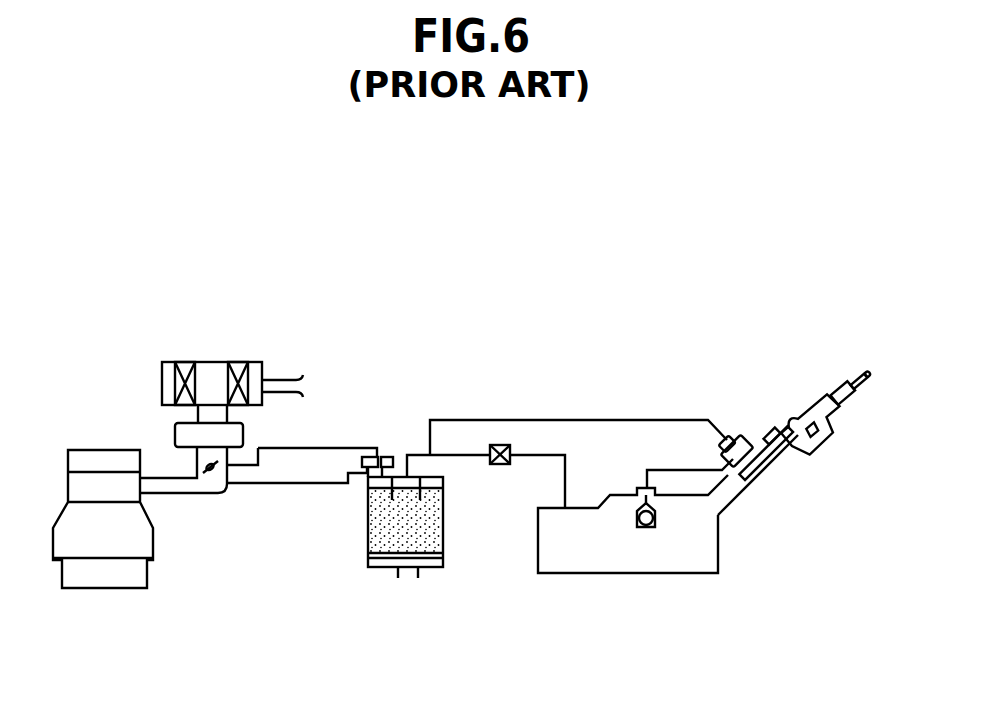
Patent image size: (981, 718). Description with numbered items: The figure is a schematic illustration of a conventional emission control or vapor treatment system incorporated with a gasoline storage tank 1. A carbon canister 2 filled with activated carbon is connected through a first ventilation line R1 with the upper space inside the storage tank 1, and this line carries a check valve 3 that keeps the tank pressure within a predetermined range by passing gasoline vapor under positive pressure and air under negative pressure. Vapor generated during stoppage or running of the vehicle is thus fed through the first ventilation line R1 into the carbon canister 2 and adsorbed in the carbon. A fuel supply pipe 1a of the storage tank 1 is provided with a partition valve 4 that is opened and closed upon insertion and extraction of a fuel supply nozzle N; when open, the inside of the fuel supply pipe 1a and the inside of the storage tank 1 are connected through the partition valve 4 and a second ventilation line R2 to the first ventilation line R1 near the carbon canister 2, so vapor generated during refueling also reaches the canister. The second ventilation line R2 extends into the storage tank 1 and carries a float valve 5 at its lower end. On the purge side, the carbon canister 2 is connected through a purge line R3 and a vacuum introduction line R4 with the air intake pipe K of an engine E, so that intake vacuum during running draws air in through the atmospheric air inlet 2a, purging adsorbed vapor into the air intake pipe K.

The engine E is at (110, 545).
The air intake pipe K is at (212, 480).
The purge line R3 is at (282, 487).
The vacuum introduction line R4 is at (302, 448).
The carbon canister 2 is at (368, 538).
The atmospheric air inlet 2a is at (410, 578).
The check valve 3 is at (498, 465).
The first ventilation line R1 is at (535, 453).
The second ventilation line R2 is at (663, 470).
The float valve 5 is at (637, 527).
The gasoline storage tank 1 is at (717, 547).
The fuel supply pipe 1a is at (745, 493).
The partition valve 4 is at (750, 440).
The fuel supply nozzle N is at (817, 417).